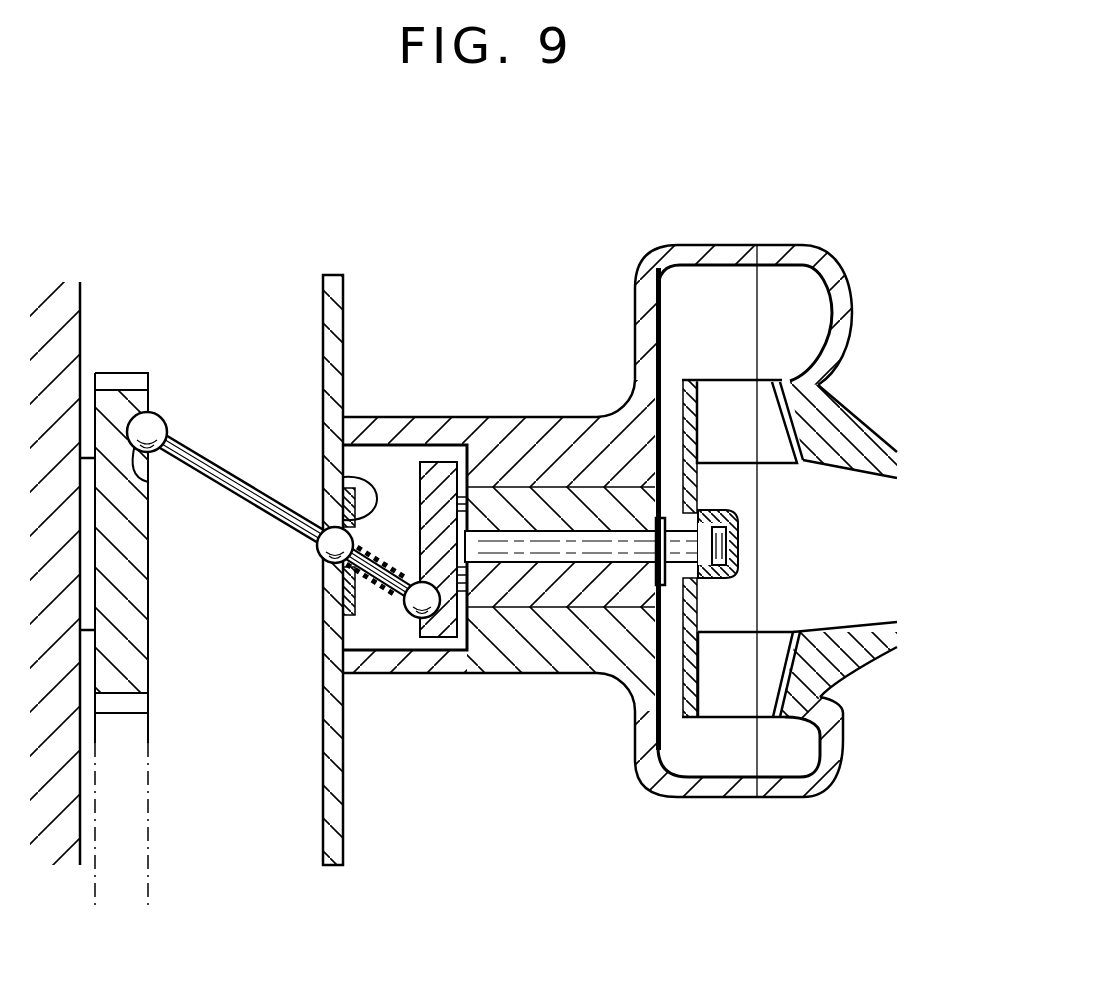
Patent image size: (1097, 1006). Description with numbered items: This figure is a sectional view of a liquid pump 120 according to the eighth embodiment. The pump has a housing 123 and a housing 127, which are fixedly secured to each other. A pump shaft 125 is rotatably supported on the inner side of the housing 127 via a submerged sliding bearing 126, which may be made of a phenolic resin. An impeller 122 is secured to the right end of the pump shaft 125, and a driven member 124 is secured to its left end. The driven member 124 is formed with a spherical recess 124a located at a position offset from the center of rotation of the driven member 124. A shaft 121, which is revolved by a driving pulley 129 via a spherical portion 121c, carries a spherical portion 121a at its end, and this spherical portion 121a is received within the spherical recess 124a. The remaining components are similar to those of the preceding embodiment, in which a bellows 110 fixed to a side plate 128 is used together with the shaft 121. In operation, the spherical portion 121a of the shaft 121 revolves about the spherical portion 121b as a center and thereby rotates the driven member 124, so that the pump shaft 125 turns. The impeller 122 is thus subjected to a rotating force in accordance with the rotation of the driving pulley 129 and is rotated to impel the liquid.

The bellows 110 is at (350, 478).
The liquid pump 120 is at (784, 214).
The shaft 121 is at (213, 473).
The spherical portion 121a is at (408, 615).
The spherical portion 121b is at (318, 562).
The spherical portion 121c is at (148, 493).
The impeller 122 is at (730, 698).
The housing 123 is at (810, 677).
The driven member 124 is at (435, 467).
The spherical recess 124a is at (443, 620).
The pump shaft 125 is at (575, 547).
The submerged sliding bearing 126 is at (563, 593).
The housing 127 is at (527, 437).
The side plate 128 is at (330, 807).
The driving pulley 129 is at (138, 658).